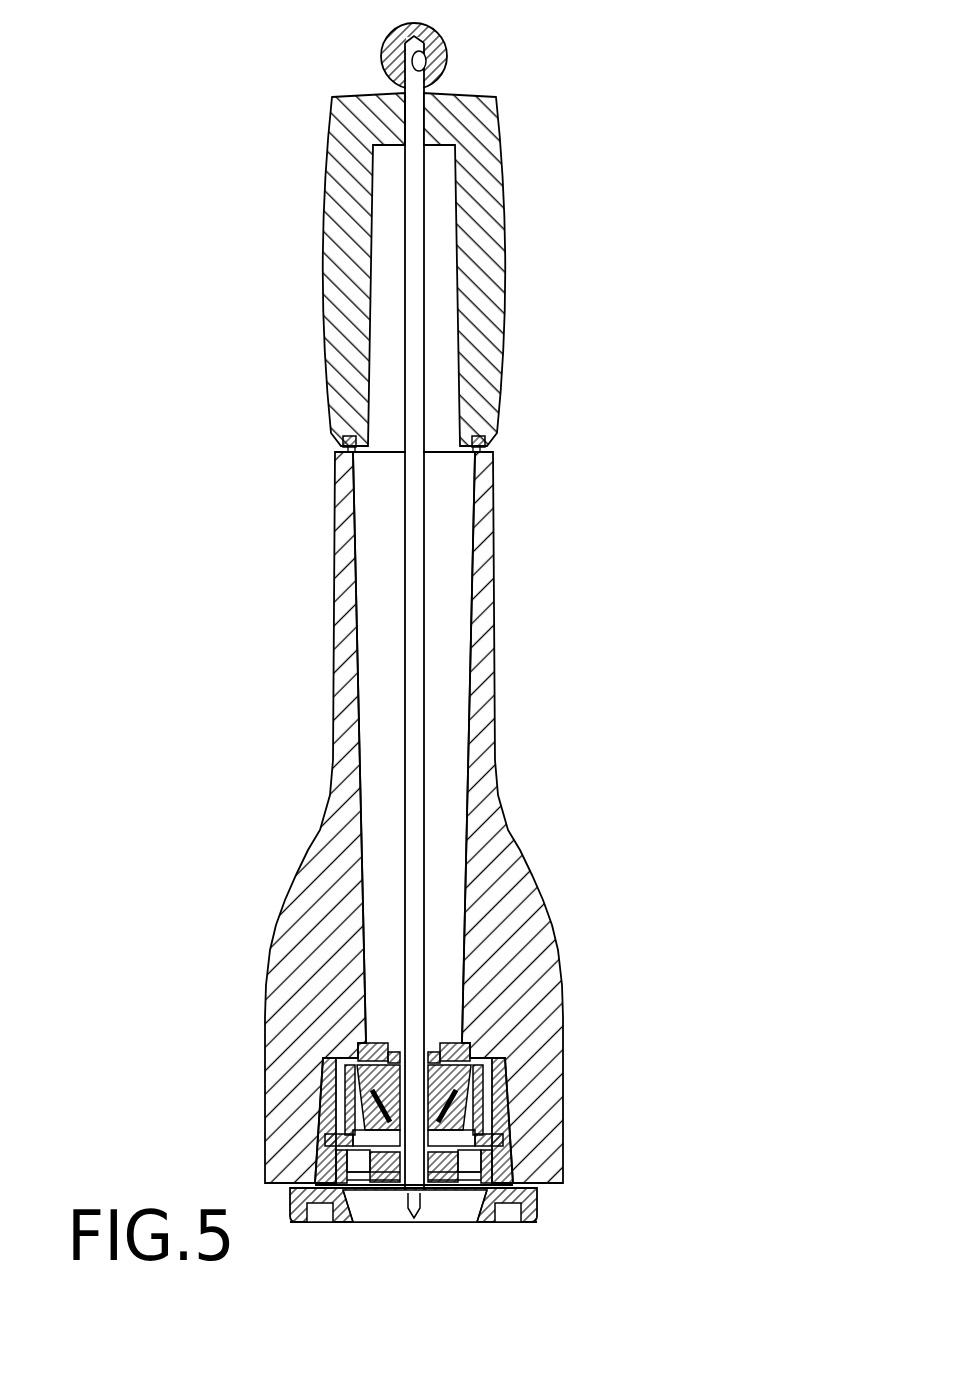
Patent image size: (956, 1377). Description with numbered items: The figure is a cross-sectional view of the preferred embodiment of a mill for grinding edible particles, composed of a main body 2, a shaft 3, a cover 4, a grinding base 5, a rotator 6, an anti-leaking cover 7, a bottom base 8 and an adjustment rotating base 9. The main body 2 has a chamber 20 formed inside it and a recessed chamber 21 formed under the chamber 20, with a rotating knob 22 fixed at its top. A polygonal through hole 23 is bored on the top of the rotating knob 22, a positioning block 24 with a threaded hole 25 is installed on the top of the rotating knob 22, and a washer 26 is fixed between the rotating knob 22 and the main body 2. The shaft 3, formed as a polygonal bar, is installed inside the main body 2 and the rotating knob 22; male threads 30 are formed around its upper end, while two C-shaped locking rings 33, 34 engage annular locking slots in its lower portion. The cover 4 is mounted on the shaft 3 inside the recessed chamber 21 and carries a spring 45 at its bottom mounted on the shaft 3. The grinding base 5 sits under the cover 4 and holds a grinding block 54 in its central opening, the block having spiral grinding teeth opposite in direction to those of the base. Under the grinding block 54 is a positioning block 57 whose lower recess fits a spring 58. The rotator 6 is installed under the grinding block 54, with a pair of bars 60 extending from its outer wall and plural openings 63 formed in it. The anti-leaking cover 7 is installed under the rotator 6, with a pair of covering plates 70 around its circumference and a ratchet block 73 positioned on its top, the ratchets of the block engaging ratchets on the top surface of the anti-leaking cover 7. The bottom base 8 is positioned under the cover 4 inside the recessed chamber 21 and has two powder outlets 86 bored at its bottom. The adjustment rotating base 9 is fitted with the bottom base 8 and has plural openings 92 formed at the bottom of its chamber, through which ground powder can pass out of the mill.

The main body 2 is at (344, 656).
The shaft 3 is at (415, 657).
The cover 4 is at (342, 1062).
The grinding base 5 is at (357, 1085).
The rotator 6 is at (485, 1130).
The anti-leaking cover 7 is at (395, 1190).
The bottom base 8 is at (505, 1165).
The adjustment rotating base 9 is at (538, 1212).
The chamber 20 is at (449, 585).
The recessed chamber 21 is at (318, 1135).
The rotating knob 22 is at (347, 308).
The polygonal through hole 23 is at (403, 118).
The positioning block 24 is at (383, 55).
The threaded hole 25 is at (426, 63).
The washer 26 is at (483, 432).
The male threads 30 is at (427, 40).
The C-shaped locking ring 33 is at (438, 1046).
The C-shaped locking ring 34 is at (470, 1115).
The spring 45 is at (462, 1060).
The grinding block 54 is at (372, 1112).
The positioning block 57 is at (500, 1080).
The spring 58 is at (366, 1190).
The bars 60 is at (340, 1148).
The openings 63 is at (330, 1216).
The covering plates 70 is at (522, 1223).
The ratchet block 73 is at (433, 1190).
The powder outlets 86 is at (455, 1190).
The openings 92 is at (482, 1225).